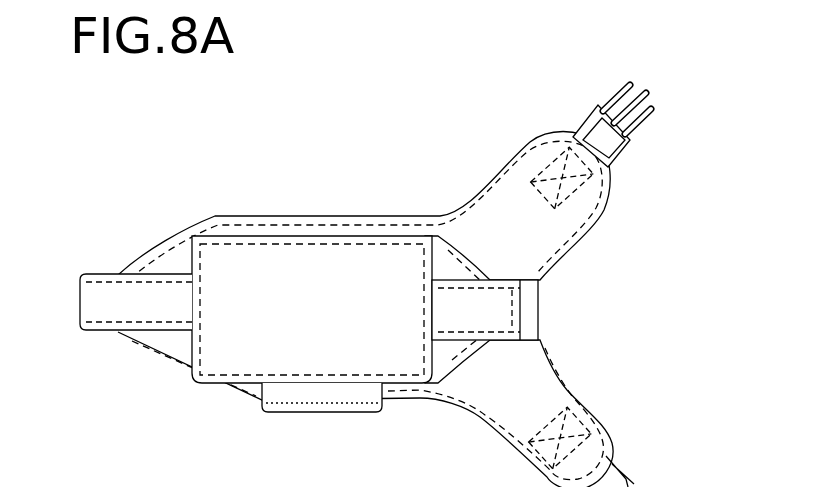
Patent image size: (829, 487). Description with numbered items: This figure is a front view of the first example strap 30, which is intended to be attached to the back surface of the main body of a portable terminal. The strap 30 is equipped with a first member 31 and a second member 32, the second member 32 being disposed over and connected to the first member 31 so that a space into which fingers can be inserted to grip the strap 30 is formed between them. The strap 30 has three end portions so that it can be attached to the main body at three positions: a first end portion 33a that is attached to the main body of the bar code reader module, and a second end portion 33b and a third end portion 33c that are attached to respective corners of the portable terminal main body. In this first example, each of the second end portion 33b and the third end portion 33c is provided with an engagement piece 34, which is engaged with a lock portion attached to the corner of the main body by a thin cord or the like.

The strap 30 is at (285, 214).
The first member 31 is at (222, 268).
The second member 32 is at (375, 236).
The first end portion 33a is at (98, 293).
The second end portion 33b is at (612, 443).
The third end portion 33c is at (560, 138).
The engagement piece 34 is at (610, 147).